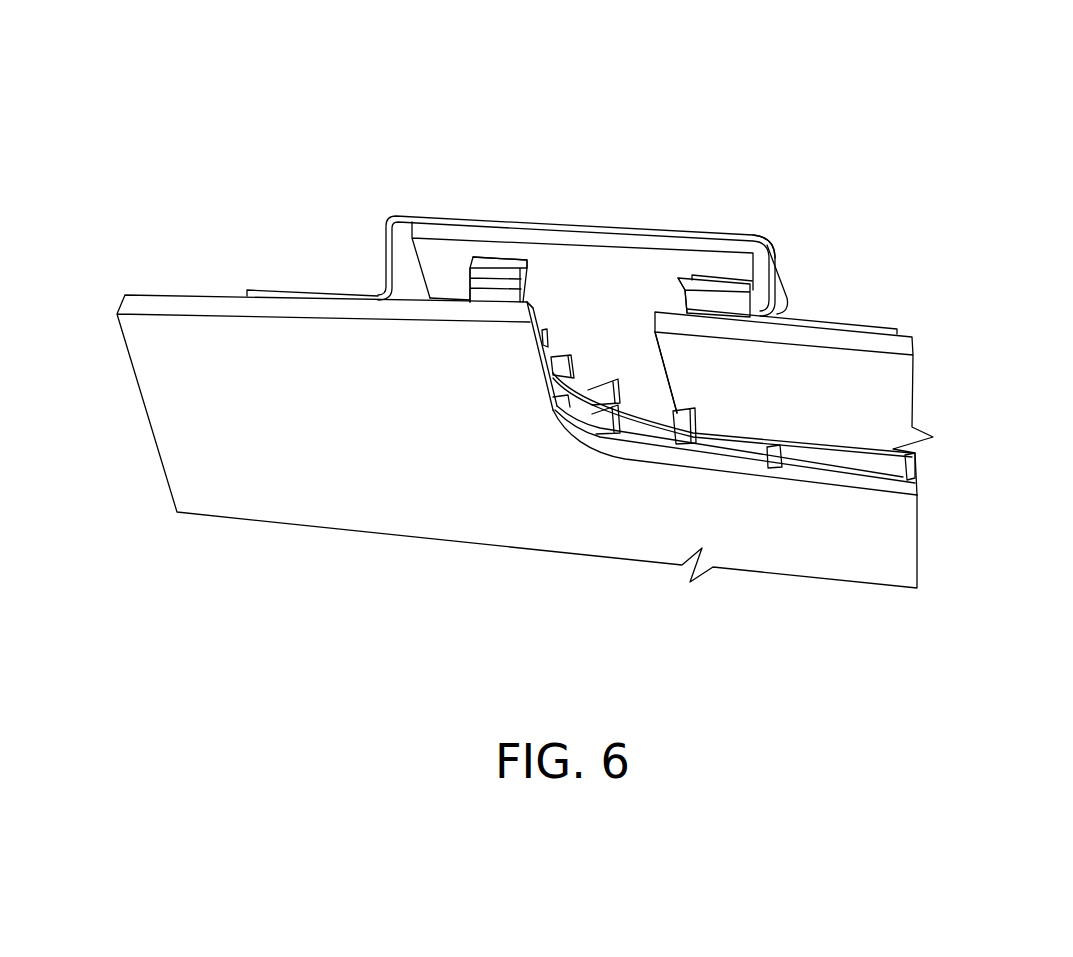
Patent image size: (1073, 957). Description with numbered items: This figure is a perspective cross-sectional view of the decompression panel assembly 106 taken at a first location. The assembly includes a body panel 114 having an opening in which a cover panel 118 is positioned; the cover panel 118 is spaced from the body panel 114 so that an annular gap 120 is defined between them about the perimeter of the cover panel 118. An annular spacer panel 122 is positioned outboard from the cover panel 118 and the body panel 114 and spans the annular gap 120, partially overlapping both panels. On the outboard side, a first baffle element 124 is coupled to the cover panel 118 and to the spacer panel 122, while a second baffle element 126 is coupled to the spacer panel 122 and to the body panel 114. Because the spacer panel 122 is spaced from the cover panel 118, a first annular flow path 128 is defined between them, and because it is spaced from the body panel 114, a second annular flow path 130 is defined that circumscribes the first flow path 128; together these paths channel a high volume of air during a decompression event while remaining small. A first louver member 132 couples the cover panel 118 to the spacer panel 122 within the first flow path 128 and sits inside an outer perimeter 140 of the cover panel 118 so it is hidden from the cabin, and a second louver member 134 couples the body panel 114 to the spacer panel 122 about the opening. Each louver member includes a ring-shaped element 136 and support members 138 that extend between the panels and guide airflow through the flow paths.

The decompression panel assembly 106 is at (826, 183).
The body panel 114 is at (240, 305).
The cover panel 118 is at (873, 377).
The annular gap 120 is at (643, 413).
The annular spacer panel 122 is at (578, 235).
The first baffle element 124 is at (773, 260).
The second baffle element 126 is at (392, 232).
The first annular flow path 128 is at (653, 264).
The second annular flow path 130 is at (555, 282).
The first louver member 132 is at (719, 248).
The second louver member 134 is at (465, 228).
The ring-shaped element 136 is at (470, 266).
The support members 138 is at (495, 256).
The outer perimeter 140 is at (657, 337).